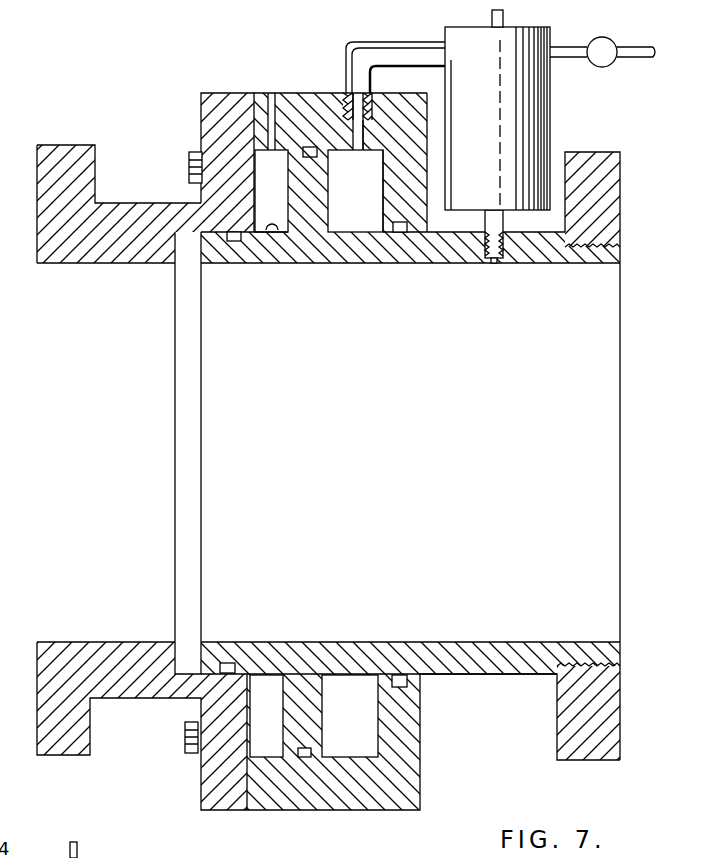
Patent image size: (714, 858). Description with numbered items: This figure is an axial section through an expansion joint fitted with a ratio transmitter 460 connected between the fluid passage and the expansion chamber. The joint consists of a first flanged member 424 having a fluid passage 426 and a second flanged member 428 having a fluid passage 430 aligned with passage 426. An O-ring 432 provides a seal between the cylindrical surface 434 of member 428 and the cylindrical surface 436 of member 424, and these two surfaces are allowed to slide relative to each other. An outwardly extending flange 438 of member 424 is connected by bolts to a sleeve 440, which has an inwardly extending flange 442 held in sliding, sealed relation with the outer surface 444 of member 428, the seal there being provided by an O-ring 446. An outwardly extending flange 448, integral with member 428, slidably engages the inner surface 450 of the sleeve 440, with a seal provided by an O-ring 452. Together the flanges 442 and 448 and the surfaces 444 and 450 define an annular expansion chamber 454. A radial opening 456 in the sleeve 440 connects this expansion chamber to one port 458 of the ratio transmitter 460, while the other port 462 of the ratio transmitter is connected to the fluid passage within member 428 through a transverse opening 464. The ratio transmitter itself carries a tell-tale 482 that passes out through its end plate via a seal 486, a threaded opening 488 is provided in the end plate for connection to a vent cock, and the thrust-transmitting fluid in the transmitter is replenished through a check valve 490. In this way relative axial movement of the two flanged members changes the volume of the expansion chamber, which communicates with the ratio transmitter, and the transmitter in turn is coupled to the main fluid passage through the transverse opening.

The first flanged member 424 is at (147, 220).
The fluid passage 426 is at (113, 263).
The second flanged member 428 is at (408, 250).
The fluid passage 430 is at (302, 265).
The O-ring 432 is at (232, 241).
The cylindrical surface 434 is at (272, 231).
The cylindrical surface 436 is at (193, 233).
The outwardly extending flange 438 is at (230, 103).
The sleeve 440 is at (290, 110).
The inwardly extending flange 442 is at (388, 205).
The outer surface 444 is at (468, 232).
The O-ring 446 is at (438, 265).
The outwardly extending flange 448 is at (320, 200).
The inner surface 450 is at (355, 191).
The O-ring 452 is at (307, 147).
The annular expansion chamber 454 is at (375, 188).
The radial opening 456 is at (360, 135).
The port 458 is at (417, 53).
The ratio transmitter 460 is at (545, 82).
The port 462 is at (510, 222).
The transverse opening 464 is at (497, 260).
The tell-tale 482 is at (68, 848).
The seal 486 is at (88, 855).
The threaded opening 488 is at (133, 857).
The check valve 490 is at (608, 38).